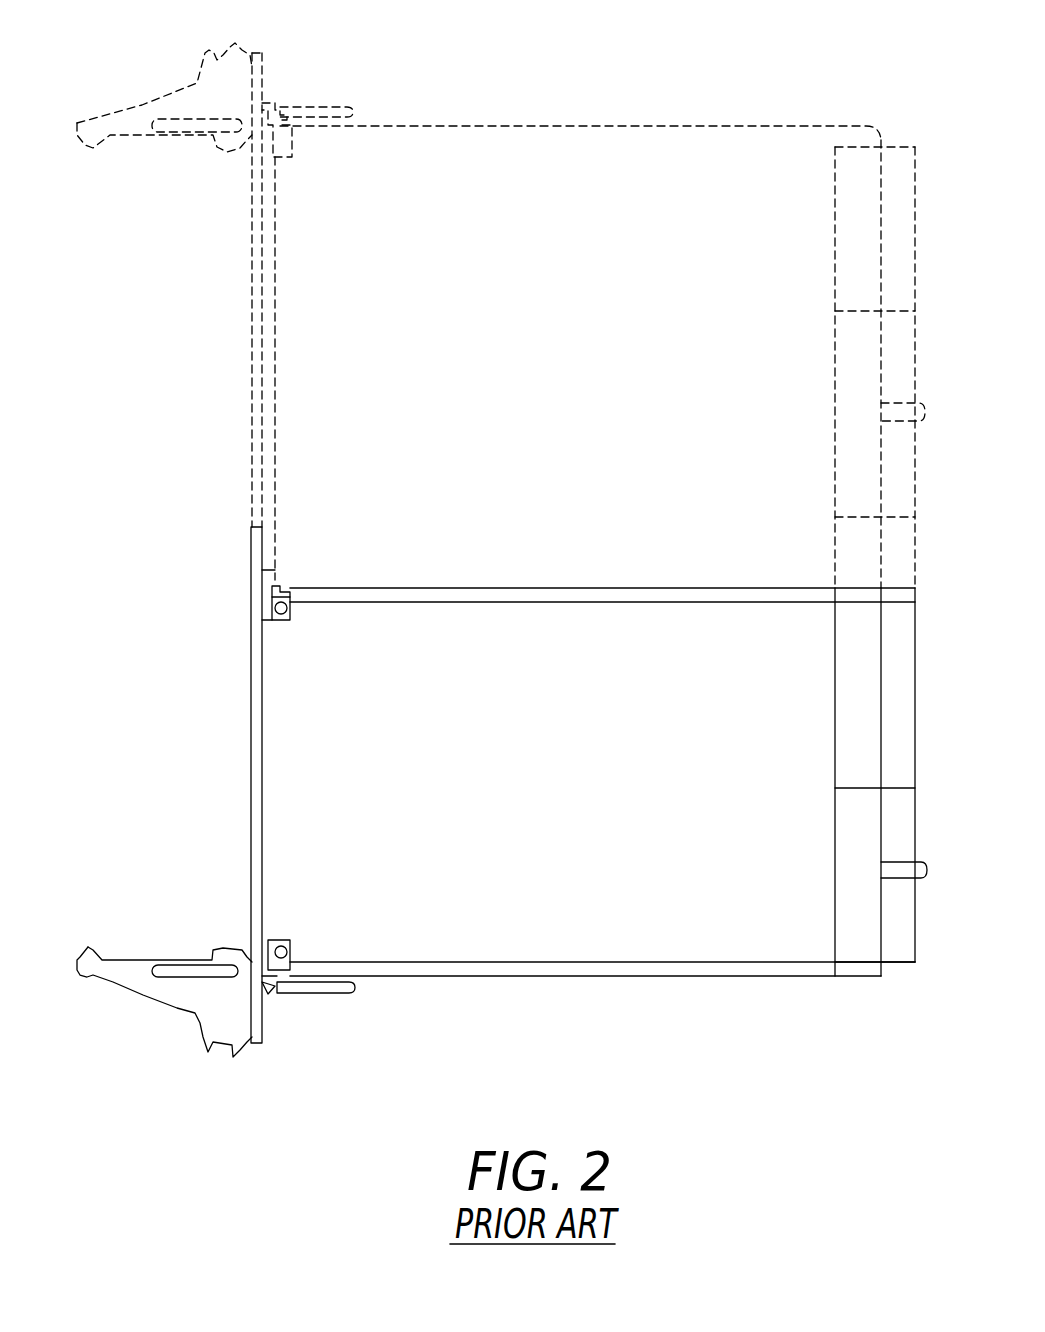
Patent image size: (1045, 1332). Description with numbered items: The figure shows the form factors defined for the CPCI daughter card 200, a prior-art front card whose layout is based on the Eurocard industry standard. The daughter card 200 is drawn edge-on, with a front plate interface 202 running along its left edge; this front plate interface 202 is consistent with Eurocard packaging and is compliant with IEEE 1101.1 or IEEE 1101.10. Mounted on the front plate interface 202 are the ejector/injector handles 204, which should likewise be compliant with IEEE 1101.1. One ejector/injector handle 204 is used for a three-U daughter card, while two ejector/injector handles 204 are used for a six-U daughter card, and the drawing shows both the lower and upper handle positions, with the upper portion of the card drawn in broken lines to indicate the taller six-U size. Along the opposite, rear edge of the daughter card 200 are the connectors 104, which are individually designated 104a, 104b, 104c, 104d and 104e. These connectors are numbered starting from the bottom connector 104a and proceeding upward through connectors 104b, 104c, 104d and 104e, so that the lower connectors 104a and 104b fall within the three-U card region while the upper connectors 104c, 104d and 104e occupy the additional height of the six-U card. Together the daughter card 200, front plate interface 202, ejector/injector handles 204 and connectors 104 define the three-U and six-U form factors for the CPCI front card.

The daughter card 200 is at (570, 927).
The front plate interface 202 is at (250, 640).
The ejector/injector handles 204 is at (140, 105).
The connectors 104 is at (823, 558).
The bottom connector 104a is at (848, 860).
The connector 104b is at (848, 700).
The connector 104c is at (848, 552).
The connector 104d is at (848, 398).
The connector 104e is at (848, 225).